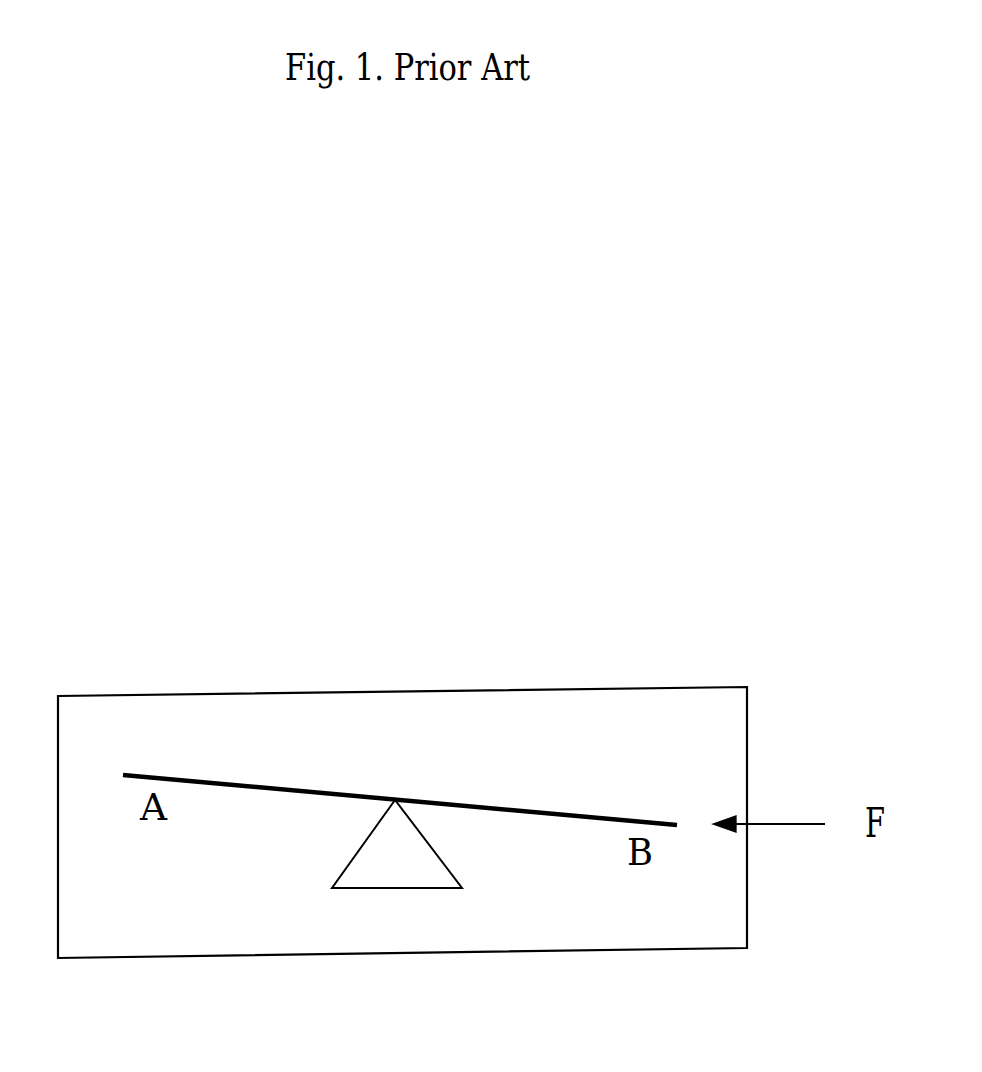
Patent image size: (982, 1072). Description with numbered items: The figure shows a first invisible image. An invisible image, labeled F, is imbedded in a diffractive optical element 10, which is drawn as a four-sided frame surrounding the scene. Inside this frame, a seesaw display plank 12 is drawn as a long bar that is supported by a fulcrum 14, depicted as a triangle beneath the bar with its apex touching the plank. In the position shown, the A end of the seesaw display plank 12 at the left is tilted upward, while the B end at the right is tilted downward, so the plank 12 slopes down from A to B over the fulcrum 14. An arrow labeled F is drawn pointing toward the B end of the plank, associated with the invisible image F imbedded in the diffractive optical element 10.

The diffractive optical element 10 is at (226, 705).
The seesaw display plank 12 is at (517, 805).
The fulcrum 14 is at (393, 873).